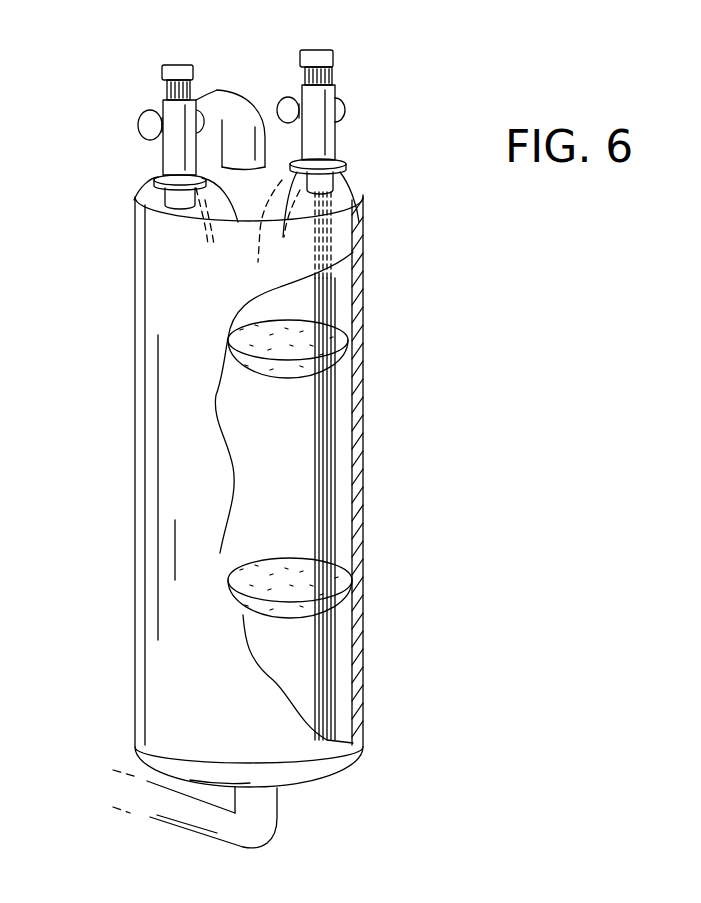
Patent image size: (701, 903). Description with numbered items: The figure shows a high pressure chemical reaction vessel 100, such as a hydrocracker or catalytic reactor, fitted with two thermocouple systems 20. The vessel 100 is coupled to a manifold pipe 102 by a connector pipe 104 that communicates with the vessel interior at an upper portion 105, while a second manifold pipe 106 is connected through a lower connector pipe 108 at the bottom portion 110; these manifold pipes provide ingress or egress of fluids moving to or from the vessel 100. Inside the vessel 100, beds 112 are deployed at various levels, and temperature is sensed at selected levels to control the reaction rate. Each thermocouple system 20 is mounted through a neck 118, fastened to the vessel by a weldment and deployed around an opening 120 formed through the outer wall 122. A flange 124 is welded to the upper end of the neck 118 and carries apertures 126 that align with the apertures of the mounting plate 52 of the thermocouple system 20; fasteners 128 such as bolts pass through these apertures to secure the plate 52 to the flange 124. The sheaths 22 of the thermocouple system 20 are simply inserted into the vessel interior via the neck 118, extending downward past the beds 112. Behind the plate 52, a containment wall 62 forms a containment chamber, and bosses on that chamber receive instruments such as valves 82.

The thermocouple system 20 is at (250, 114).
The sheath 22 is at (320, 466).
The mounting plate 52 is at (160, 176).
The containment wall 62 is at (175, 148).
The valve 82 is at (147, 117).
The high pressure chemical reaction vessel 100 is at (135, 362).
The manifold pipe 102 is at (207, 88).
The connector pipe 104 is at (263, 140).
The upper portion 105 is at (163, 207).
The second manifold pipe 106 is at (190, 832).
The lower connector pipe 108 is at (267, 803).
The bottom portion 110 is at (345, 762).
The bed 112 is at (347, 348).
The neck 118 is at (170, 198).
The opening 120 is at (366, 220).
The outer wall 122 is at (363, 563).
The flange 124 is at (158, 188).
The aperture 126 is at (232, 238).
The fastener 128 is at (256, 229).